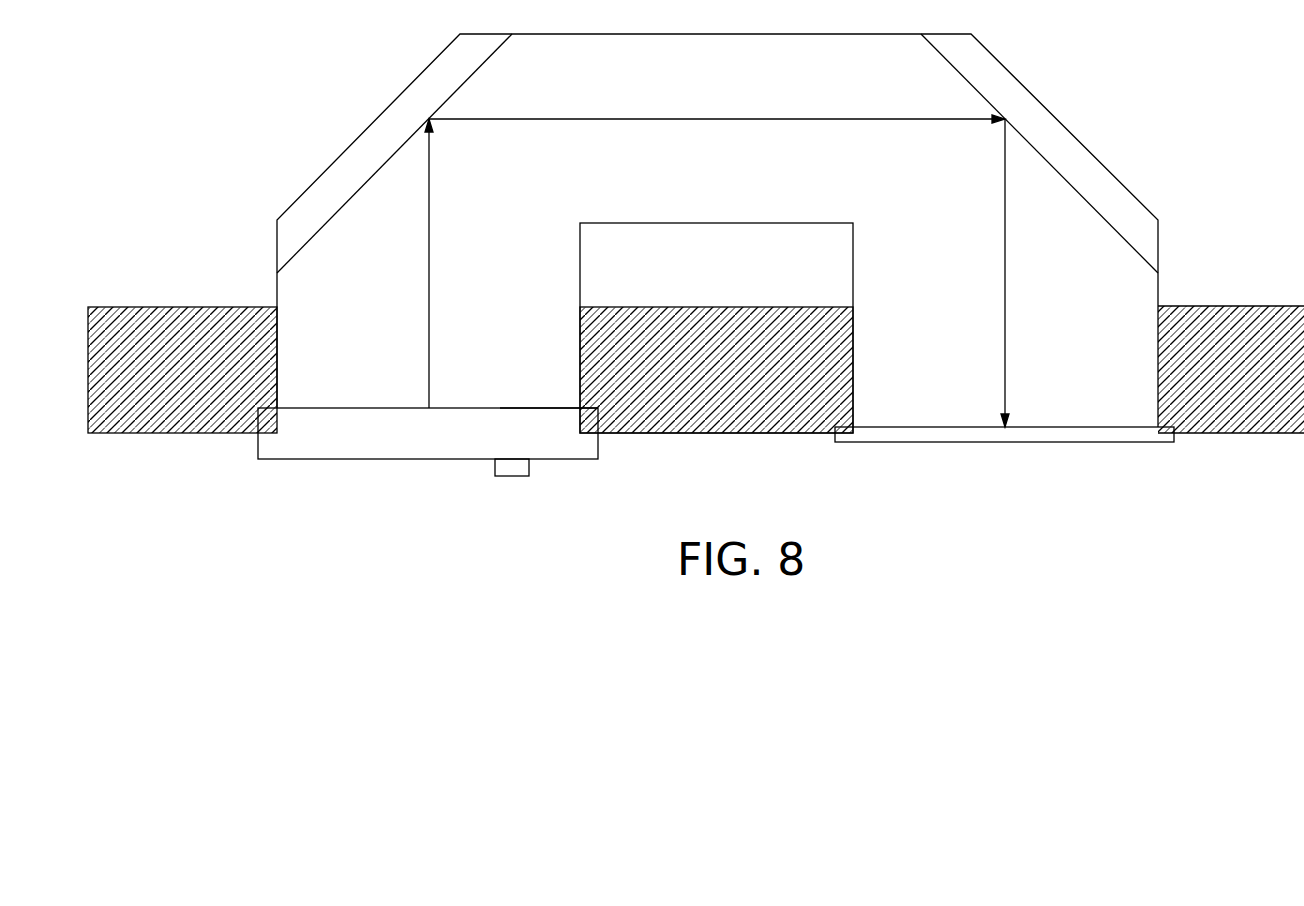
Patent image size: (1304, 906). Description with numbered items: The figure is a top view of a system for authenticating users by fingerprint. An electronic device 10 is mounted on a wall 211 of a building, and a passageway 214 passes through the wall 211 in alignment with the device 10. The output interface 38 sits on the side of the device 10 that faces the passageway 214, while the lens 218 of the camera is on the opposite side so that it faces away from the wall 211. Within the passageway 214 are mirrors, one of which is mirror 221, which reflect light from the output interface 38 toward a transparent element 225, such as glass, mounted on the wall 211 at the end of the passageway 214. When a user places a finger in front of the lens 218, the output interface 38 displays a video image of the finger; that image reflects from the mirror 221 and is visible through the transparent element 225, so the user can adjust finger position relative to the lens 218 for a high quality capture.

The passageway 214 is at (770, 52).
The mirror 221 is at (372, 153).
The wall 211 is at (165, 434).
The electronic device 10 is at (355, 460).
The output interface 38 is at (530, 401).
The lens 218 is at (513, 477).
The transparent element 225 is at (1007, 443).